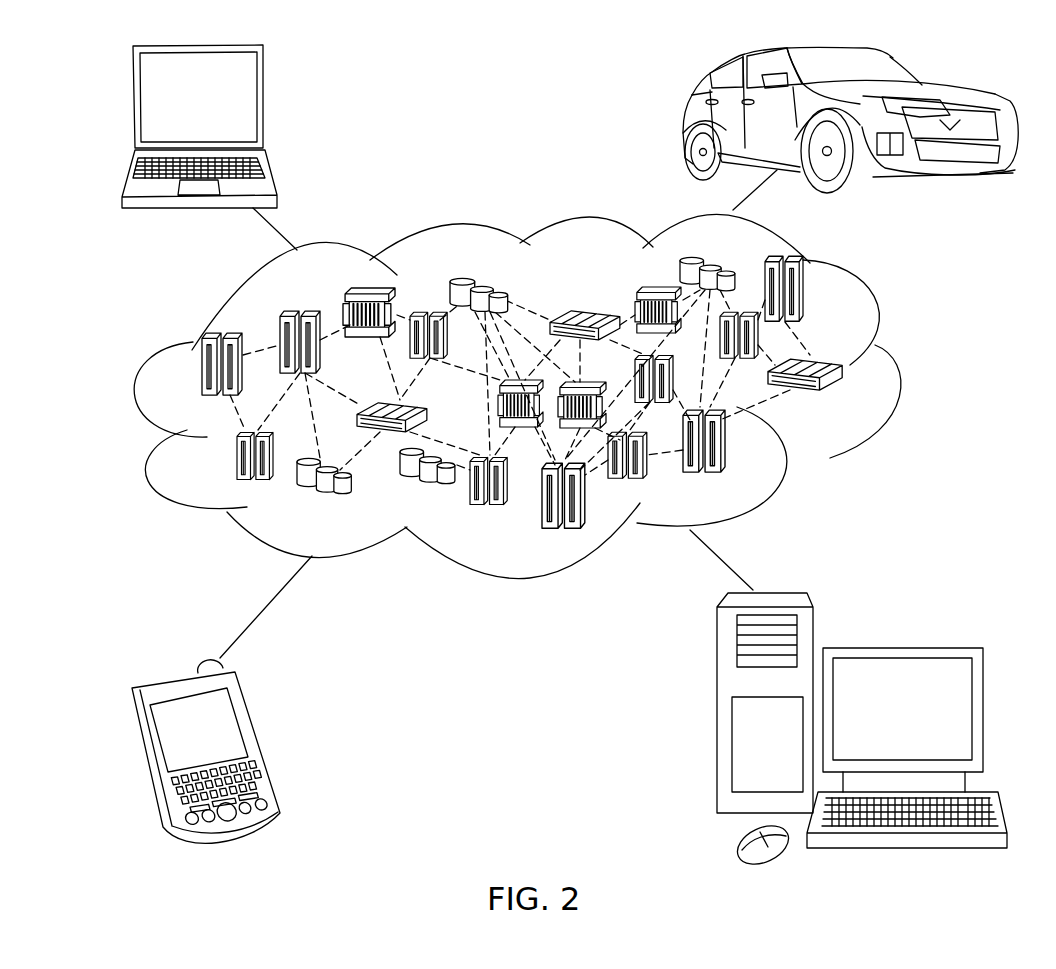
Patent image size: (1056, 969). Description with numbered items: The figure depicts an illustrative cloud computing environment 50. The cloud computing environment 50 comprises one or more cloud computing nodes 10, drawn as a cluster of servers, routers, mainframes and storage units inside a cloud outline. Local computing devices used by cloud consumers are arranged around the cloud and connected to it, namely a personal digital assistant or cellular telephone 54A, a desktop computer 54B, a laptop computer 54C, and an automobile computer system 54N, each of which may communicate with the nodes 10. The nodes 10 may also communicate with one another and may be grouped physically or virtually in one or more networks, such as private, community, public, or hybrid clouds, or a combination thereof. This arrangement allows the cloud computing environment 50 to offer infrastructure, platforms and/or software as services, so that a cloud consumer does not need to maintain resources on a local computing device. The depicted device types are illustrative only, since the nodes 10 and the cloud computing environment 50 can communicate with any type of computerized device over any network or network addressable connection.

The cloud computing nodes 10 is at (843, 398).
The cloud computing environment 50 is at (902, 370).
The personal digital assistant or cellular telephone 54A is at (258, 742).
The desktop computer 54B is at (900, 647).
The laptop computer 54C is at (267, 105).
The automobile computer system 54N is at (683, 118).